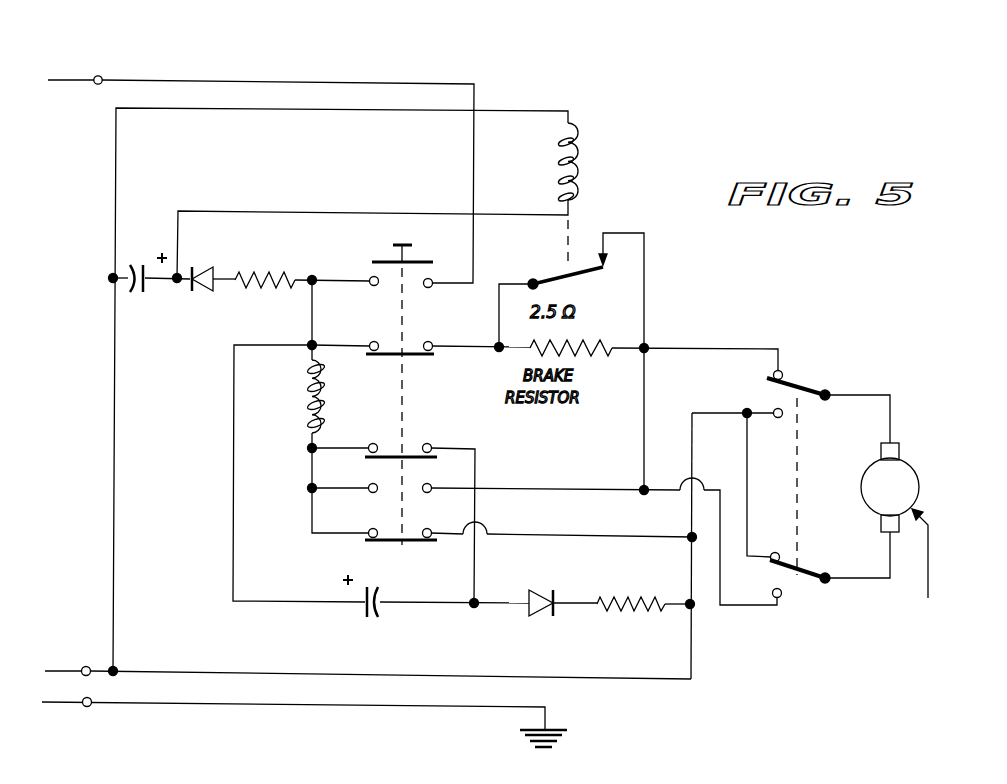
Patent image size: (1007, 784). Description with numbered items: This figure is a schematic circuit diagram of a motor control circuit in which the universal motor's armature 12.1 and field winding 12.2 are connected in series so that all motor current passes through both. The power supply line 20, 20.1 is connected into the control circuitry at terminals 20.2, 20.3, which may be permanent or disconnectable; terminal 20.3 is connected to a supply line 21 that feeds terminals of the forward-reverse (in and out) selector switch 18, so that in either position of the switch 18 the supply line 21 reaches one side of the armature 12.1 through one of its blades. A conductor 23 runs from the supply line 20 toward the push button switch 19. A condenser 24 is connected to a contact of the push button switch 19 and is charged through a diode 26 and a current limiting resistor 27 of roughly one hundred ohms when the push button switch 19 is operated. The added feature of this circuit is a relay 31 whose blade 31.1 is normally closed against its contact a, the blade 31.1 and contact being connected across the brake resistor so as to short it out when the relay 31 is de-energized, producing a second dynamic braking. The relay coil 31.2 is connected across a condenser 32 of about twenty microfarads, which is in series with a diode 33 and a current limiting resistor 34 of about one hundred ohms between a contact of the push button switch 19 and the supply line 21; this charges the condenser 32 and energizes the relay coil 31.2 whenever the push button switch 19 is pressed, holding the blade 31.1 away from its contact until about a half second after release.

The power supply line 20 is at (60, 80).
The power supply line 20.1 is at (47, 670).
The terminal 20.2 is at (105, 77).
The terminal 20.3 is at (88, 667).
The supply line 21 is at (190, 671).
The supply conductor 23 is at (233, 80).
The condenser 32 is at (138, 258).
The diode 33 is at (208, 266).
The current limiting resistor 34 is at (280, 268).
The push button switch 19 is at (418, 262).
The relay 31 is at (582, 172).
The relay coil 31.2 is at (578, 130).
The blade 31.1 is at (572, 285).
The field winding 12.2 is at (300, 397).
The armature 12.1 is at (910, 462).
The selector switch 18 is at (805, 385).
The condenser 24 is at (376, 620).
The diode 26 is at (542, 620).
The current limiting resistor 27 is at (640, 612).